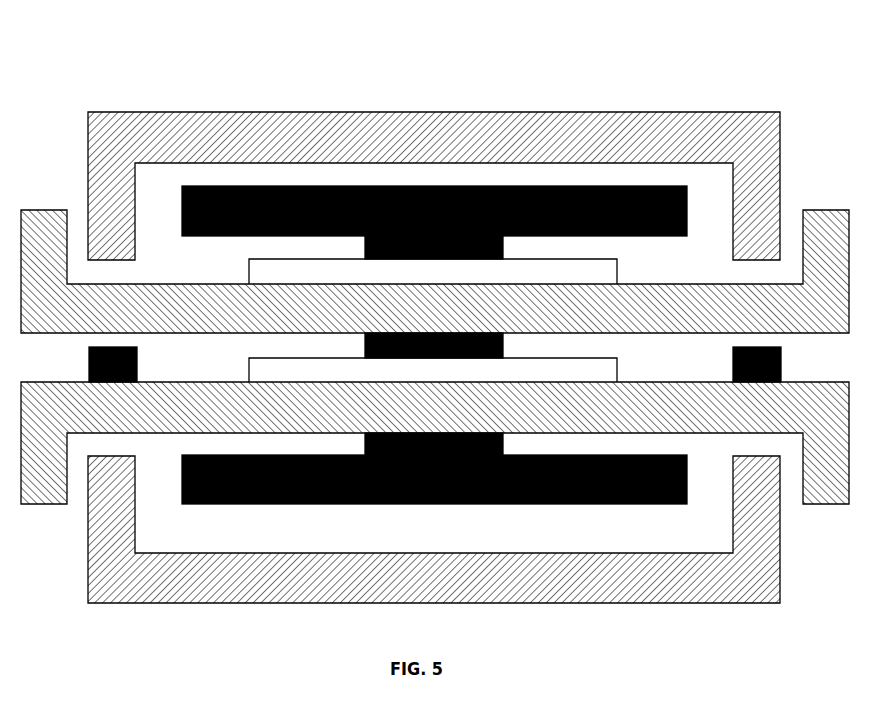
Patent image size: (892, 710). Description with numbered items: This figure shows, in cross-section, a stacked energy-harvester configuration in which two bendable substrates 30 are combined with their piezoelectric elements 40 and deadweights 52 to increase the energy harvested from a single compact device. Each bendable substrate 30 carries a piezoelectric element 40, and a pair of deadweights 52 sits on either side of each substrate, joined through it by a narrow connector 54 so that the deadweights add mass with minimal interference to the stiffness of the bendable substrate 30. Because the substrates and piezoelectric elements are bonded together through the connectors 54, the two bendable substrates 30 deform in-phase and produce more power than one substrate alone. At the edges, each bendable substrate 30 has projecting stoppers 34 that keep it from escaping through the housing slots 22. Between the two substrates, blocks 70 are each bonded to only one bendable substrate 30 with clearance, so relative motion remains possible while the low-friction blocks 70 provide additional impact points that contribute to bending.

The housing slot 22 is at (78, 236).
The bendable substrate 30 is at (478, 307).
The projecting stopper 34 is at (53, 490).
The piezoelectric element 40 is at (382, 277).
The deadweight 52 is at (222, 186).
The narrow connector 54 is at (365, 247).
The block 70 is at (140, 366).